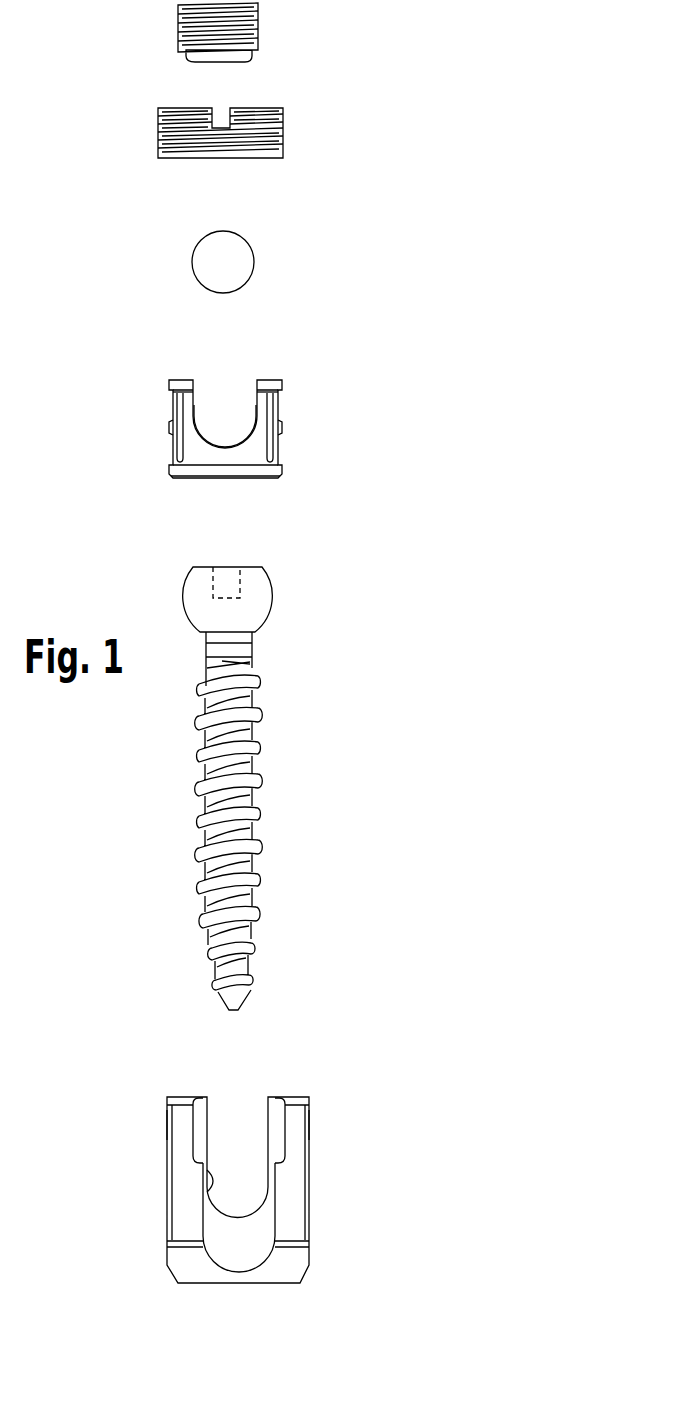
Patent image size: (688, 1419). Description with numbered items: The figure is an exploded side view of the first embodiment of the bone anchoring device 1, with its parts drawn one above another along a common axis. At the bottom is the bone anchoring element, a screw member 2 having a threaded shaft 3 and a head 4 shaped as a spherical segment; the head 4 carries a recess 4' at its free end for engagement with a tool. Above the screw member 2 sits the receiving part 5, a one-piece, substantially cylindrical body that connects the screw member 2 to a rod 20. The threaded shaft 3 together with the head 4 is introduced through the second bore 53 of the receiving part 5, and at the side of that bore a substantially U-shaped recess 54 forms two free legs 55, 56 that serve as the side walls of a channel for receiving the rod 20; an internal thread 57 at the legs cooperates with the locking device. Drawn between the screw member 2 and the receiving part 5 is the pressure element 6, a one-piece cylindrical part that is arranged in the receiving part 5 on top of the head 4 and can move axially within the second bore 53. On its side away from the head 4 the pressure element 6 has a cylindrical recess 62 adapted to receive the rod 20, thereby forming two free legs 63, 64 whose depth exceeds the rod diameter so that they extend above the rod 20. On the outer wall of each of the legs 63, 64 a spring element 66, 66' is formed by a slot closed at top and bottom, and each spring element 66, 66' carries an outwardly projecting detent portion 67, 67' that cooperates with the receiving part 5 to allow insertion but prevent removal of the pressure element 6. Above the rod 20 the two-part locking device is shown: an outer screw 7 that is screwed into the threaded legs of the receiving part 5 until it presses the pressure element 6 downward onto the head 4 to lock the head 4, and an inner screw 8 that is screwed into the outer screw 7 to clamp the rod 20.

The bone anchoring device 1 is at (418, 243).
The screw member 2 is at (263, 638).
The threaded shaft 3 is at (257, 777).
The head 4 is at (266, 597).
The recess 4' is at (220, 552).
The receiving part 5 is at (313, 1197).
The pressure element 6 is at (282, 472).
The outer screw 7 is at (285, 128).
The inner screw 8 is at (262, 27).
The rod 20 is at (243, 260).
The second bore 53 is at (247, 1128).
The U-shaped recess 54 is at (206, 1195).
The first free leg 55 is at (175, 1123).
The second free leg 56 is at (293, 1120).
The internal thread 57 is at (203, 1117).
The cylindrical recess 62 is at (252, 405).
The first leg of pressure element 63 is at (187, 405).
The second leg of pressure element 64 is at (277, 397).
The spring element 66 is at (129, 431).
The spring element 66' is at (327, 431).
The detent portion 67 is at (124, 415).
The detent portion 67' is at (334, 415).